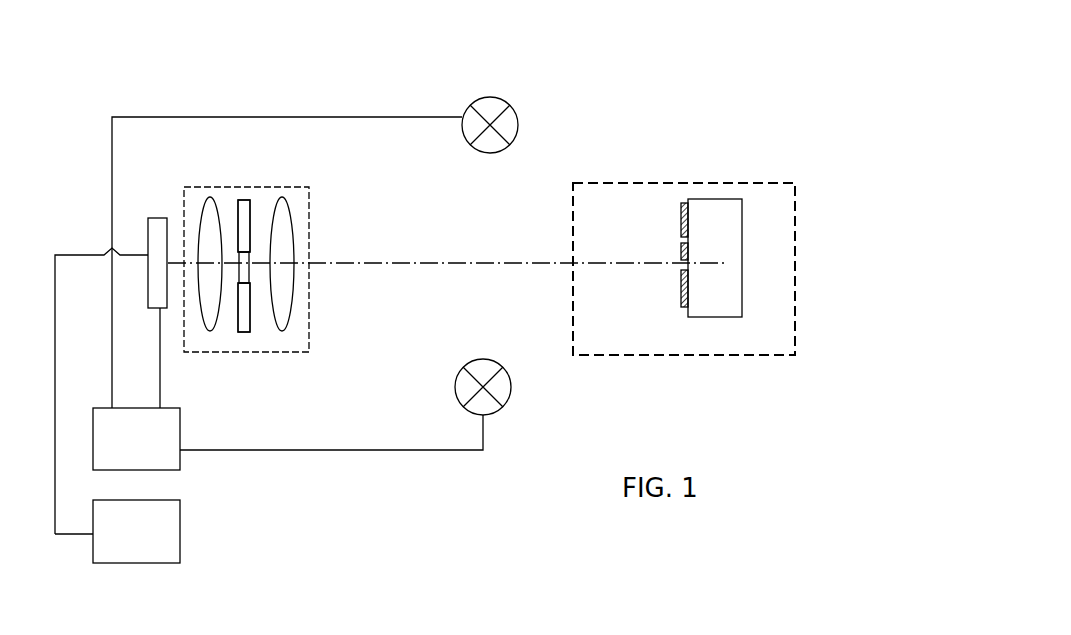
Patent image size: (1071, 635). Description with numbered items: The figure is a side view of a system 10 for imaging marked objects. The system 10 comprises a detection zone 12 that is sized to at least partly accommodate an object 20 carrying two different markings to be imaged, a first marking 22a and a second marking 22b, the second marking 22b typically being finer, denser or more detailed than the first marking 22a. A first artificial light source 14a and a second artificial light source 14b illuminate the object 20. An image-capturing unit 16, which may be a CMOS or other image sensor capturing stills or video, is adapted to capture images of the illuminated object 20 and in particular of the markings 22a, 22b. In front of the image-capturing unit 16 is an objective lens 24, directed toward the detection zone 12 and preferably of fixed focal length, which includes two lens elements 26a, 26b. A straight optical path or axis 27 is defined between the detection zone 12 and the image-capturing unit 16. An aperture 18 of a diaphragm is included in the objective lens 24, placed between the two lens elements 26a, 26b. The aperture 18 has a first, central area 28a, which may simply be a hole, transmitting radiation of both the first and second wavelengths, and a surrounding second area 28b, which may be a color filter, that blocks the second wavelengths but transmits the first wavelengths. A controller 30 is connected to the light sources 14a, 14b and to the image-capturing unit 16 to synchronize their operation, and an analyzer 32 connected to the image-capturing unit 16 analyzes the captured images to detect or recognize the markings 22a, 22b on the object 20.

The system 10 is at (231, 52).
The detection zone 12 is at (685, 355).
The first artificial light source 14a is at (493, 97).
The second artificial light source 14b is at (483, 387).
The image-capturing unit 16 is at (158, 218).
The aperture 18 is at (245, 198).
The object 20 is at (720, 199).
The first marking 22a is at (684, 228).
The second marking 22b is at (684, 290).
The objective lens 24 is at (309, 204).
The lens element 26a is at (210, 331).
The lens element 26b is at (291, 292).
The optical path or axis 27 is at (393, 263).
The first central area 28a is at (250, 273).
The second area 28b is at (252, 215).
The controller 30 is at (166, 448).
The analyzer 32 is at (166, 550).